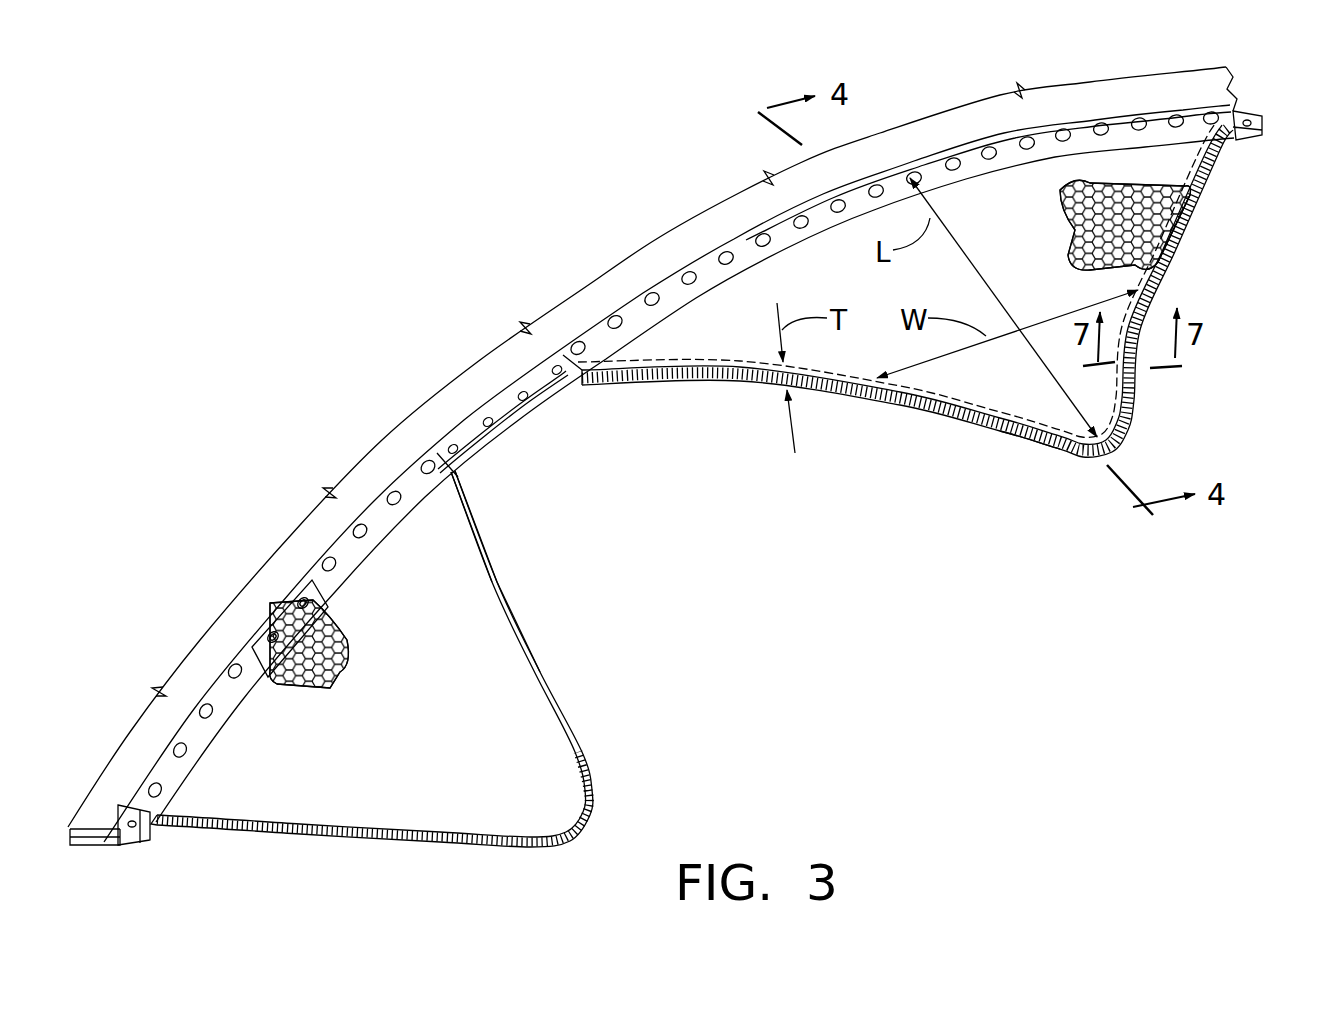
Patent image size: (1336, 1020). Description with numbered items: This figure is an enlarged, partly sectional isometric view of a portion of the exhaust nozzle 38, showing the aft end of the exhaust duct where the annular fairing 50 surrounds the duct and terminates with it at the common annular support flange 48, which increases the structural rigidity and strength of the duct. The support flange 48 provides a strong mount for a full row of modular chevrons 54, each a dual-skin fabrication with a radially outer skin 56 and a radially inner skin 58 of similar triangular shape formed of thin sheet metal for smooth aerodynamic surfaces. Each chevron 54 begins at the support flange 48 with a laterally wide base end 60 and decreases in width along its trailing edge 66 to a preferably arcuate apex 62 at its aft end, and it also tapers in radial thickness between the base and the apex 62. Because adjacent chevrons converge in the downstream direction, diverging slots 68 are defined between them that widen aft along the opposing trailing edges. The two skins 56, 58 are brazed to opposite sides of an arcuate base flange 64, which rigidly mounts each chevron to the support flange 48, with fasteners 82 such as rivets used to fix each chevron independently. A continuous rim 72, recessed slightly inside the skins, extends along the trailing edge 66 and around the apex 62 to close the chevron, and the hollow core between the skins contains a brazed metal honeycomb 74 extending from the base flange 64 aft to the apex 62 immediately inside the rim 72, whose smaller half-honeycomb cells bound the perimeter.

The fan casing assembly 38 is at (1250, 82).
The annular support flange 48 is at (150, 832).
The annular fairing 50 is at (961, 144).
The chevron 54 is at (523, 770).
The radially outer skin 56 is at (498, 642).
The radially inner skin 58 is at (545, 683).
The base end 60 is at (745, 240).
The apex 62 is at (1088, 458).
The base flange 64 is at (288, 620).
The trailing edge 66 is at (417, 843).
The diverging slots 68 is at (683, 524).
The rim 72 is at (1183, 205).
The honeycomb 74 is at (1058, 215).
The fasteners 82 is at (1138, 122).